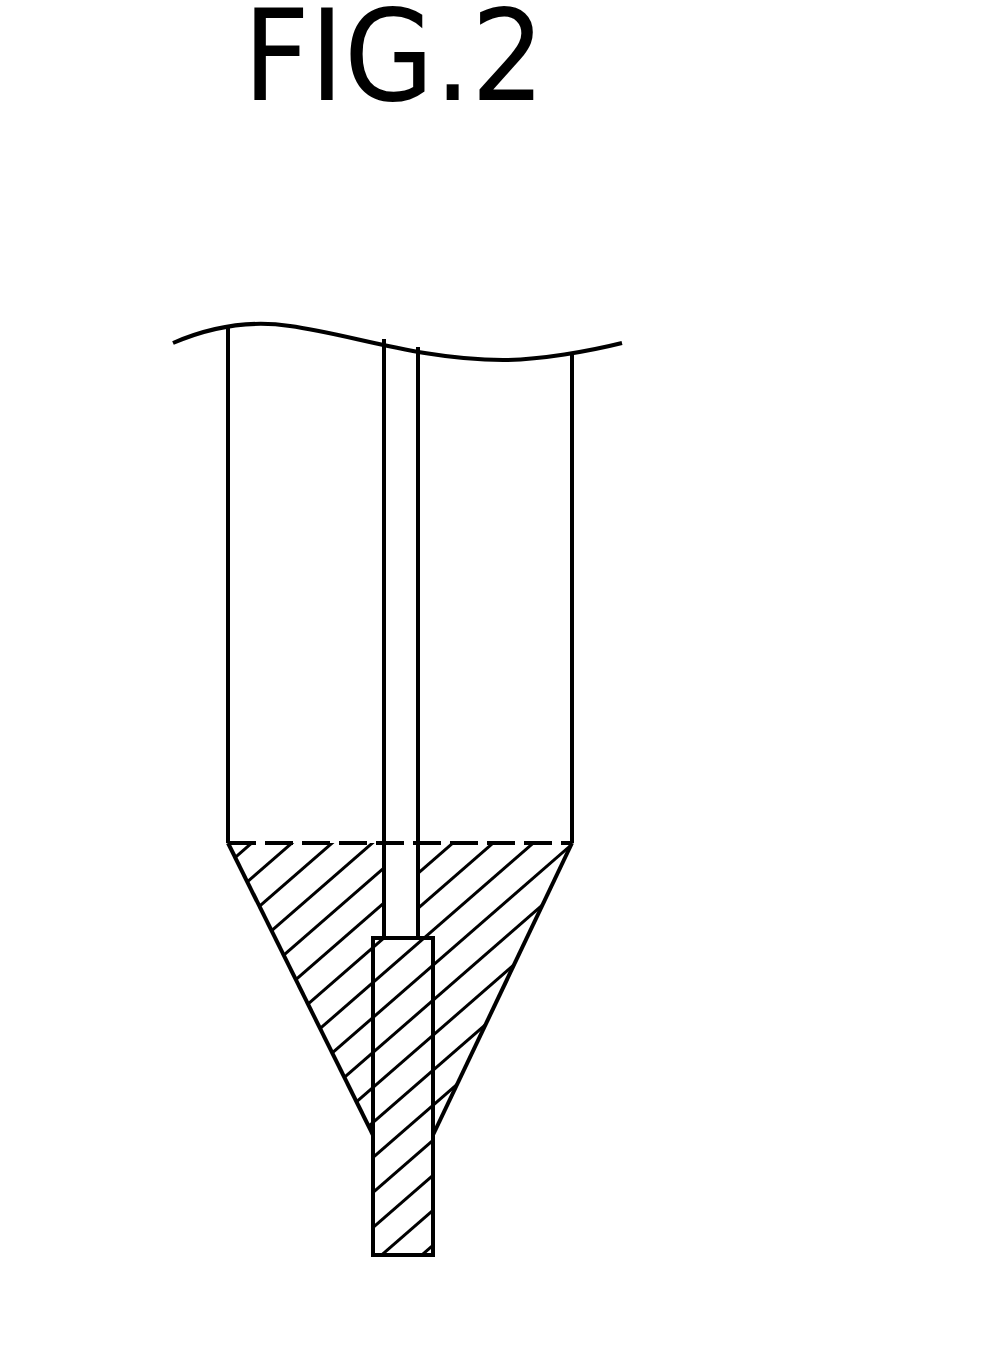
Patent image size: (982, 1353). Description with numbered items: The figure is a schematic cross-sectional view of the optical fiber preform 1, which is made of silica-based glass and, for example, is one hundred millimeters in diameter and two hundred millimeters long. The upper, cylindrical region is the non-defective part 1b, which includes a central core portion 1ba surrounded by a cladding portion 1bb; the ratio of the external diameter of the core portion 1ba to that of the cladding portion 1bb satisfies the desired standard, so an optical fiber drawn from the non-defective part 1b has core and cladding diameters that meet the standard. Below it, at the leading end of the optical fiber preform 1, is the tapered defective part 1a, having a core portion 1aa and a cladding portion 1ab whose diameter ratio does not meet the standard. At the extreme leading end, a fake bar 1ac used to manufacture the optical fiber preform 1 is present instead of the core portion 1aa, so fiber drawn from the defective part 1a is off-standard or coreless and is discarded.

The optical fiber preform 1 is at (646, 486).
The non-defective part 1b is at (196, 448).
The core portion 1ba is at (380, 617).
The cladding portion 1bb is at (248, 763).
The defective part 1a is at (556, 934).
The core portion 1aa is at (418, 890).
The cladding portion 1ab is at (302, 993).
The fake bar 1ac is at (380, 1202).